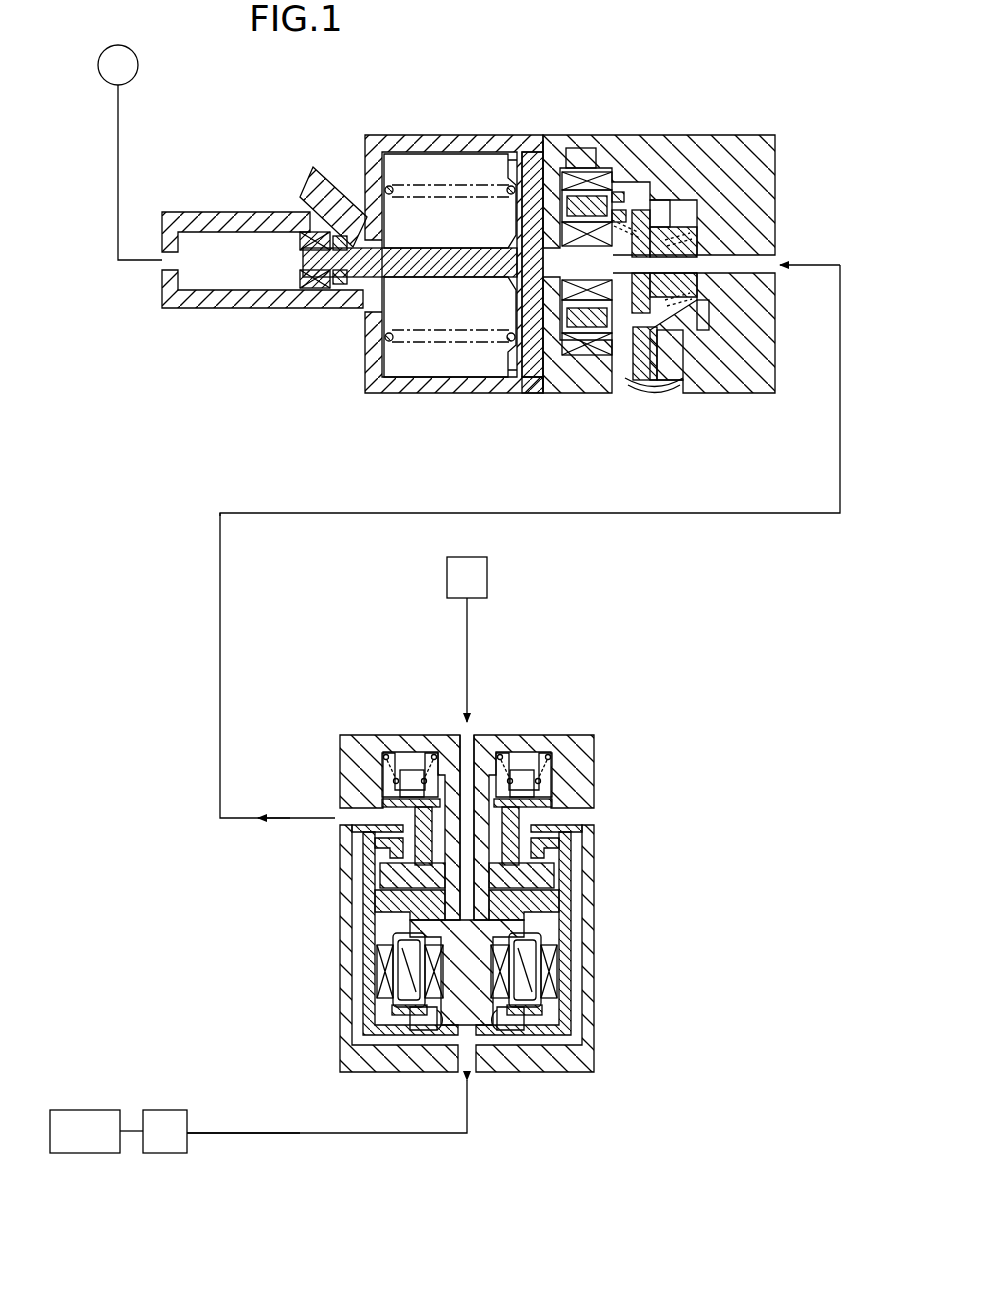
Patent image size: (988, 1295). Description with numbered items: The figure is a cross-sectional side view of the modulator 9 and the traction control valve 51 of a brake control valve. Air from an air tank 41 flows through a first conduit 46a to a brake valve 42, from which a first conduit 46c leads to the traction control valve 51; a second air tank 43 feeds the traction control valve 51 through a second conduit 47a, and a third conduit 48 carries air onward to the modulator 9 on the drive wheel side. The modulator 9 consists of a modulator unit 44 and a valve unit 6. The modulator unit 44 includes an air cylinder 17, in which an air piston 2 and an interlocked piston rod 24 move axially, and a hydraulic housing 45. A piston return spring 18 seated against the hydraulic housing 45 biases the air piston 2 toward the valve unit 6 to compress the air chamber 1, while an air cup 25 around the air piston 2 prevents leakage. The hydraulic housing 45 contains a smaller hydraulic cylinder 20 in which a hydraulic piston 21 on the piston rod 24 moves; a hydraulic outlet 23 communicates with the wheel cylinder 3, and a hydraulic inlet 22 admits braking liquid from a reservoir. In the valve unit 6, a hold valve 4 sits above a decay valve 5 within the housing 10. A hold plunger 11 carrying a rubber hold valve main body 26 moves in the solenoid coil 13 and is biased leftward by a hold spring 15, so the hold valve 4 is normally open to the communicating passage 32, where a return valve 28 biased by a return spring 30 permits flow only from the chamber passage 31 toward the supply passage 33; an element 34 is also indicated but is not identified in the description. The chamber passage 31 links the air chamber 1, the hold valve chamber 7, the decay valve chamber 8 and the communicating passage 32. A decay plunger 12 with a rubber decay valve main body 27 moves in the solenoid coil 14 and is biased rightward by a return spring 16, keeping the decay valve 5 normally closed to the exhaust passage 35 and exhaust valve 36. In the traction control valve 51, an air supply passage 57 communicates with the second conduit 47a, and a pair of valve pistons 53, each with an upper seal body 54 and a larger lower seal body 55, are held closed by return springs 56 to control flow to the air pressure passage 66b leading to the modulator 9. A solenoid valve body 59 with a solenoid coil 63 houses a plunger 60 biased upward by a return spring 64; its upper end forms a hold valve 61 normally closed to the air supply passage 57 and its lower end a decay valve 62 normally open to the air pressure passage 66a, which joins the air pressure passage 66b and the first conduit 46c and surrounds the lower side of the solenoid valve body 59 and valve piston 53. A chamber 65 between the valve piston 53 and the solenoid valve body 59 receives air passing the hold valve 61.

The air chamber 1 is at (560, 165).
The air piston 2 is at (507, 167).
The wheel cylinder 3 is at (138, 63).
The hold valve 4 is at (575, 180).
The decay valve 5 is at (592, 367).
The valve unit 6 is at (778, 330).
The hold valve chamber 7 is at (606, 190).
The decay valve chamber 8 is at (702, 332).
The modulator 9 is at (487, 100).
The housing 10 is at (778, 160).
The hold plunger 11 is at (595, 195).
The decay plunger 12 is at (580, 320).
The solenoid coil 13 is at (615, 210).
The solenoid coil 14 is at (578, 350).
The hold spring 15 is at (620, 212).
The return spring 16 is at (535, 375).
The air cylinder 17 is at (412, 365).
The piston return spring 18 is at (408, 178).
The hydraulic cylinder 20 is at (200, 230).
The hydraulic piston 21 is at (302, 266).
The hydraulic inlet 22 is at (318, 190).
The hydraulic outlet 23 is at (162, 262).
The piston rod 24 is at (443, 250).
The air cup 25 is at (530, 165).
The hold valve main body 26 is at (641, 235).
The decay valve main body 27 is at (640, 360).
The return valve 28 is at (670, 240).
The return spring 30 is at (700, 235).
The chamber passage 31 is at (572, 150).
The communicating passage 32 is at (692, 222).
The supply passage 33 is at (753, 265).
The cam plate 34 is at (655, 215).
The exhaust passage 35 is at (672, 352).
The exhaust valve 36 is at (660, 388).
The air tank 41 is at (80, 1110).
The brake valve 42 is at (165, 1125).
The air tank 43 is at (487, 577).
The modulator unit 44 is at (366, 390).
The hydraulic housing 45 is at (370, 300).
The first conduit 46a is at (132, 1130).
The first conduit 46c is at (298, 1133).
The second conduit 47a is at (470, 645).
The third conduit 48 is at (352, 513).
The traction control valve 51 is at (612, 740).
The valve piston 53 is at (530, 770).
The seal body 54 is at (380, 800).
The seal body 55 is at (375, 870).
The return spring 56 is at (395, 760).
The air supply passage 57 is at (470, 740).
The solenoid valve body 59 is at (350, 980).
The plunger 60 is at (385, 970).
The hold valve 61 is at (405, 905).
The decay valve 62 is at (400, 1015).
The solenoid coil 63 is at (405, 960).
The return spring 64 is at (428, 1030).
The chamber 65 is at (390, 850).
The air pressure passage 66a is at (365, 1035).
The air pressure passage 66b is at (360, 828).